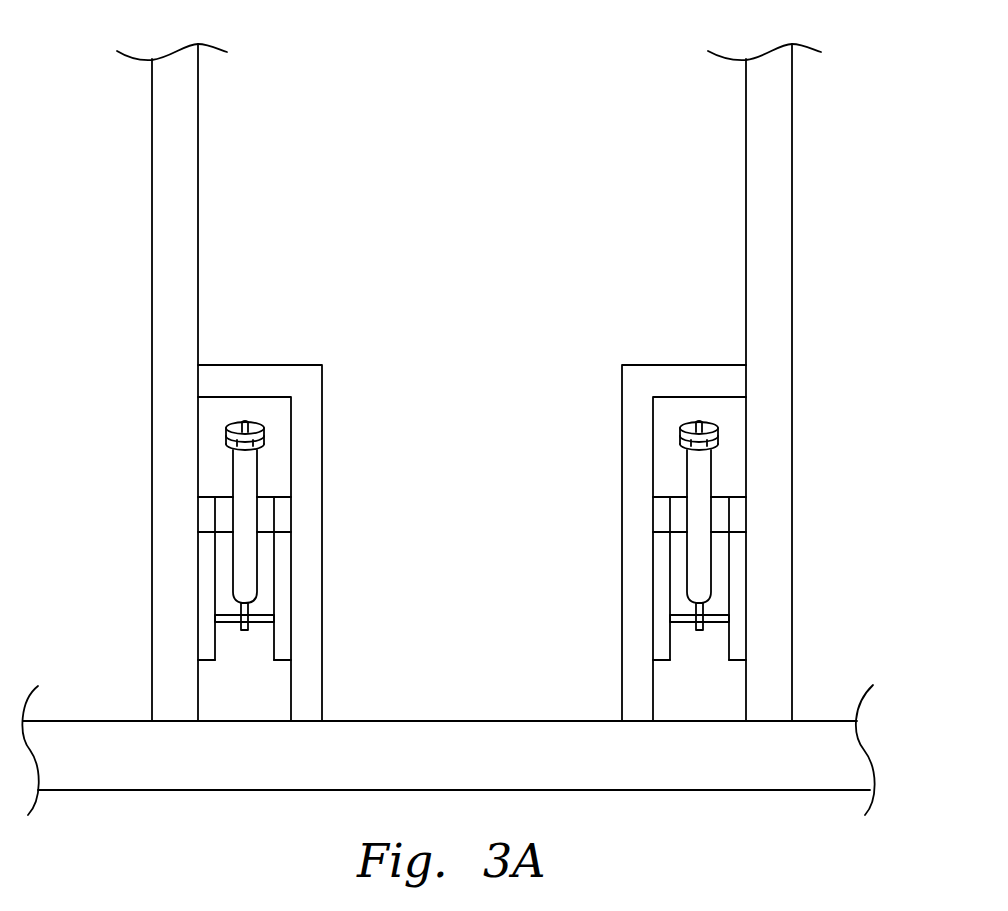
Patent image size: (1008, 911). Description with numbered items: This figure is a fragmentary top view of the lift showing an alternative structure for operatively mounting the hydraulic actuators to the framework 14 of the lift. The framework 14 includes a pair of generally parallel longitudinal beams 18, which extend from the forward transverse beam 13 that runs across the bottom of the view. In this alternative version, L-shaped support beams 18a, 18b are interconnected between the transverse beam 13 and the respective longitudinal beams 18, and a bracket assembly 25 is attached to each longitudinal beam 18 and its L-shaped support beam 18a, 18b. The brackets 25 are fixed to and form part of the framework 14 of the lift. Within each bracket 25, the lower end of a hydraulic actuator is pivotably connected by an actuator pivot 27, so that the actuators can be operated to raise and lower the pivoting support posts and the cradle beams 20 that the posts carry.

The forward transverse beam 13 is at (636, 791).
The framework 14 is at (792, 177).
The longitudinal beam 18 is at (198, 193).
The L-shaped support beam 18a is at (322, 405).
The L-shaped support beam 18b is at (620, 405).
The cradle beam 20 is at (258, 472).
The bracket assembly 25 is at (282, 577).
The actuator pivot 27 is at (228, 624).